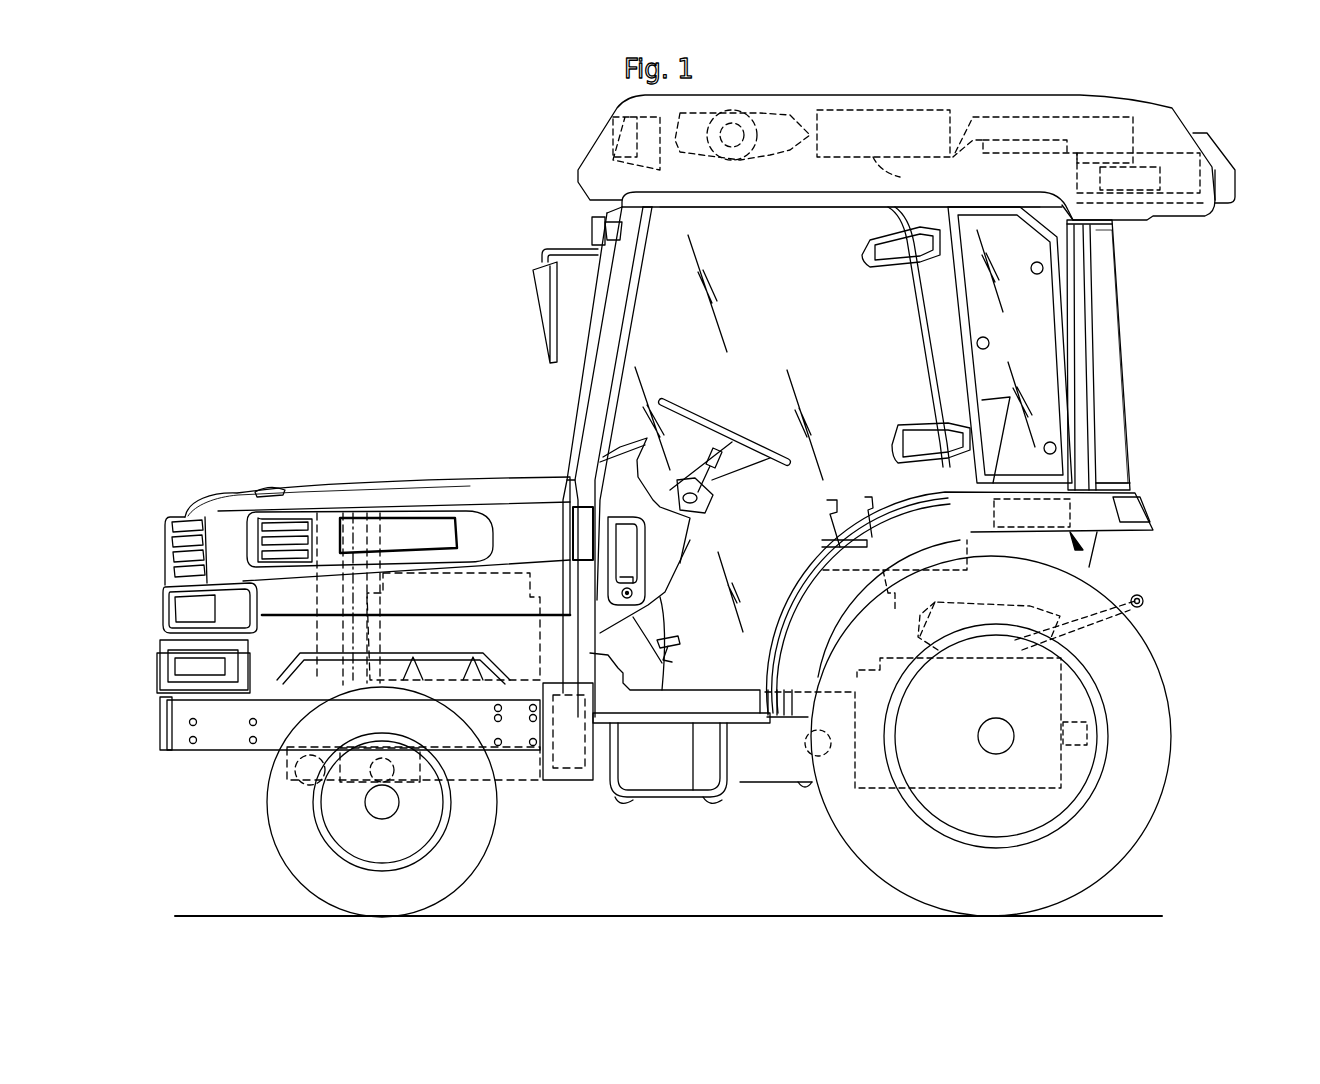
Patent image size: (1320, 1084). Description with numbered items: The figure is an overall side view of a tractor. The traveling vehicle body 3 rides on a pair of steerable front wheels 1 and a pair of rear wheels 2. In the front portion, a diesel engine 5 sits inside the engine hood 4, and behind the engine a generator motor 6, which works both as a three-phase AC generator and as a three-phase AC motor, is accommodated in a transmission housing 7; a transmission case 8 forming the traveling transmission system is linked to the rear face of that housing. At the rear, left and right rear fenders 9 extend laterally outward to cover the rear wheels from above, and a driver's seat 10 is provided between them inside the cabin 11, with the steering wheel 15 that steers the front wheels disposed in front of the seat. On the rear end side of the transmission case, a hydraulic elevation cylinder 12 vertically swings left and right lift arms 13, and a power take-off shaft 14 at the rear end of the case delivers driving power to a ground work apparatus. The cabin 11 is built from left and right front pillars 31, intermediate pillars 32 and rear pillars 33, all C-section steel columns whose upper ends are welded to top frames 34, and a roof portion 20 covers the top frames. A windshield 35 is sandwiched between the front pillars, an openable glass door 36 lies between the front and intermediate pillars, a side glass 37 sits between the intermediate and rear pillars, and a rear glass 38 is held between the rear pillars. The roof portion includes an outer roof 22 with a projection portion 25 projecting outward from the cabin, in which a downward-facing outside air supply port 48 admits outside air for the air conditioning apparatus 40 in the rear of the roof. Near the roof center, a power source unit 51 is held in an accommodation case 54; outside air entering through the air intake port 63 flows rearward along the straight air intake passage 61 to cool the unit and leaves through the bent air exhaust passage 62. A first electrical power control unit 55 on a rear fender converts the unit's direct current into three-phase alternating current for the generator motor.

The front wheels 1 is at (280, 845).
The rear wheels 2 is at (1157, 818).
The traveling vehicle body 3 is at (382, 460).
The engine hood 4 is at (240, 494).
The engine 5 is at (470, 573).
The generator motor 6 is at (587, 770).
The transmission housing 7 is at (557, 782).
The transmission case 8 is at (868, 790).
The rear fenders 9 is at (1105, 492).
The driver's seat 10 is at (880, 578).
The cabin 11 is at (546, 226).
The elevation cylinder 12 is at (970, 606).
The lift arms 13 is at (1095, 618).
The power take-off shaft 14 is at (1087, 740).
The steering wheel 15 is at (700, 413).
The roof portion 20 is at (1198, 124).
The outer roof 22 is at (668, 205).
The projection portion 25 is at (1208, 193).
The front pillars 31 is at (598, 452).
The intermediate pillars 32 is at (940, 377).
The rear pillars 33 is at (1073, 343).
The top frames 34 is at (790, 208).
The windshield 35 is at (580, 350).
The glass door 36 is at (628, 394).
The side glass 37 is at (1053, 393).
The rear glass 38 is at (1112, 415).
The air conditioning apparatus 40 is at (1170, 217).
The outside air supply port 48 is at (1133, 210).
The power source unit 51 is at (838, 162).
The accommodation case 54 is at (908, 176).
The first electrical power control unit 55 is at (1070, 515).
The air intake passage 61 is at (760, 171).
The air exhaust passage 62 is at (1013, 145).
The air intake port 63 is at (603, 118).